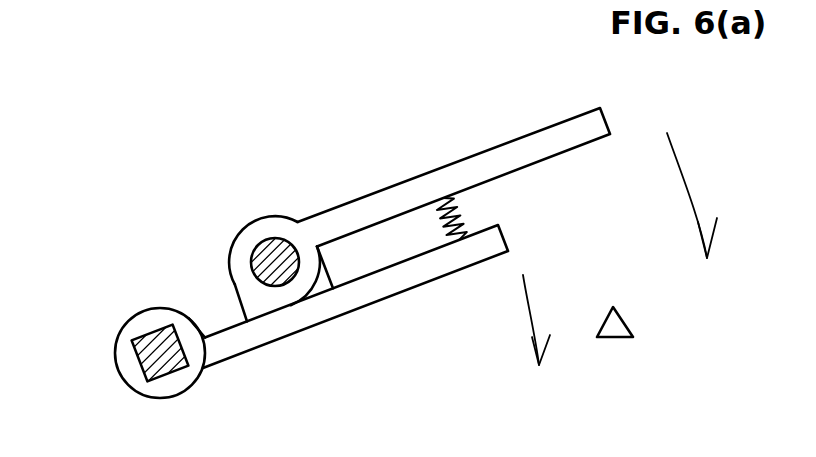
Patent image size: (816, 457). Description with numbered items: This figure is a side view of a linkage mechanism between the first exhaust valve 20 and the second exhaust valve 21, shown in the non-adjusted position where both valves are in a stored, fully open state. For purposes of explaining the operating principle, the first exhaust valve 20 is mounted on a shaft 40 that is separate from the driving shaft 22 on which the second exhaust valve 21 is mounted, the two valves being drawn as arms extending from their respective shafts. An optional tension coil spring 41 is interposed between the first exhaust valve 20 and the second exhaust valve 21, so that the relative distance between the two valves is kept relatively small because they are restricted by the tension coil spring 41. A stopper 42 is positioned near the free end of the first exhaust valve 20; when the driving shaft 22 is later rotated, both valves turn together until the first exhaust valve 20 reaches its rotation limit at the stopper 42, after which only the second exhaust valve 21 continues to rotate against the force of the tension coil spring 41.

The first exhaust valve 20 is at (492, 149).
The second exhaust valve 21 is at (368, 305).
The driving shaft 22 is at (140, 363).
The shaft 40 is at (262, 258).
The tension coil spring 41 is at (468, 208).
The stopper 42 is at (614, 327).